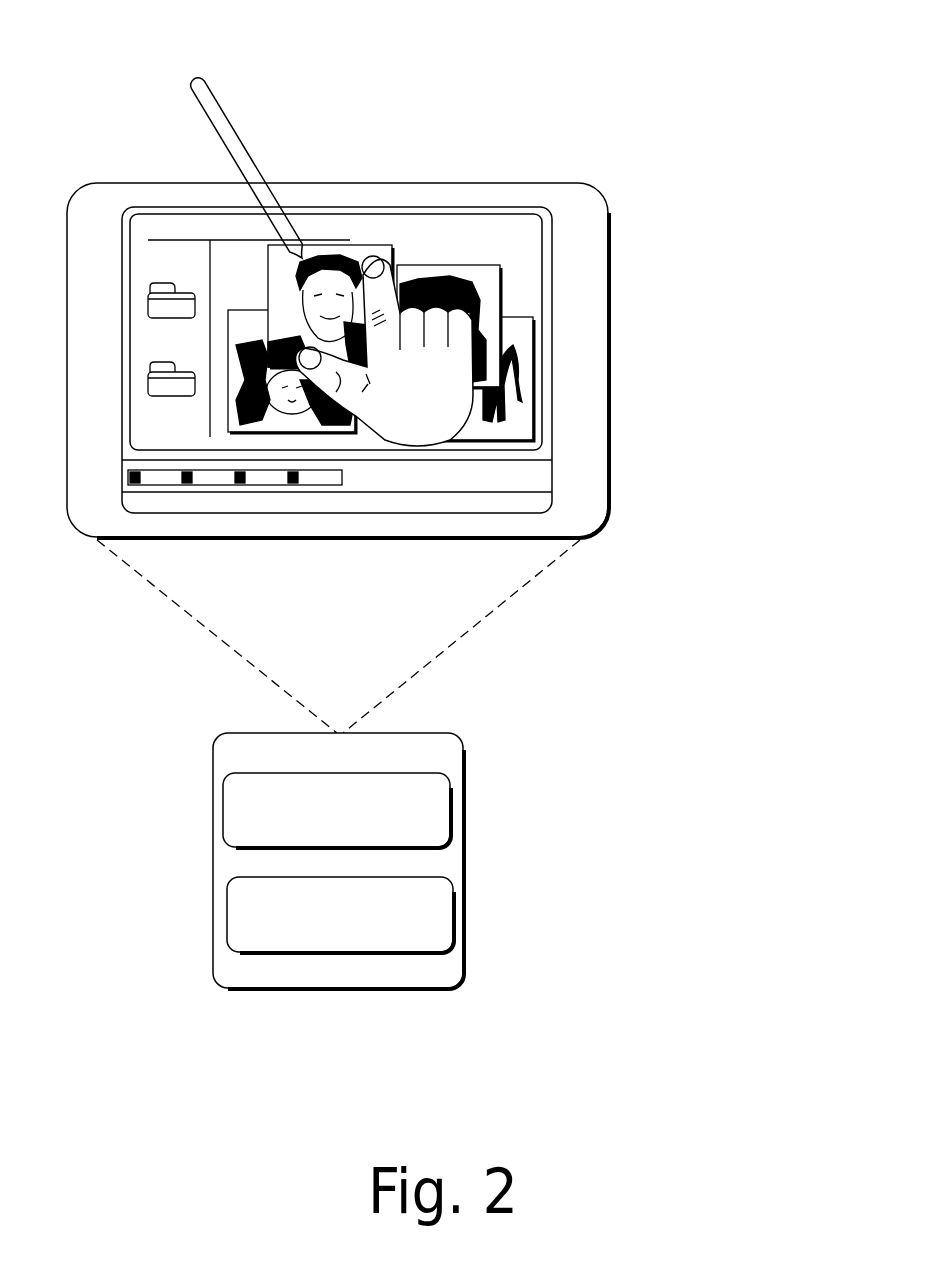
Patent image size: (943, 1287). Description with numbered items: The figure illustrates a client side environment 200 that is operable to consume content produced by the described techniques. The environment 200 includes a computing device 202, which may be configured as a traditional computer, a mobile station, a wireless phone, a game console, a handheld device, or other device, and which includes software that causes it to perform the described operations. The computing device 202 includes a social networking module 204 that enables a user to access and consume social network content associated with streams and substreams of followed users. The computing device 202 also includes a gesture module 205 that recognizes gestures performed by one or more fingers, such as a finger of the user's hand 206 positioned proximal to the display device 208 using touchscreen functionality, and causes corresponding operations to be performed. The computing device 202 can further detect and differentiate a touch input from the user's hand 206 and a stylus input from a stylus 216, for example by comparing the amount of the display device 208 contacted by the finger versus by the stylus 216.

The client side environment 200 is at (697, 72).
The computing device 202 is at (441, 763).
The social networking module 204 is at (358, 826).
The gesture module 205 is at (361, 931).
The user's hand 206 is at (436, 431).
The display device 208 is at (528, 238).
The stylus 216 is at (201, 78).